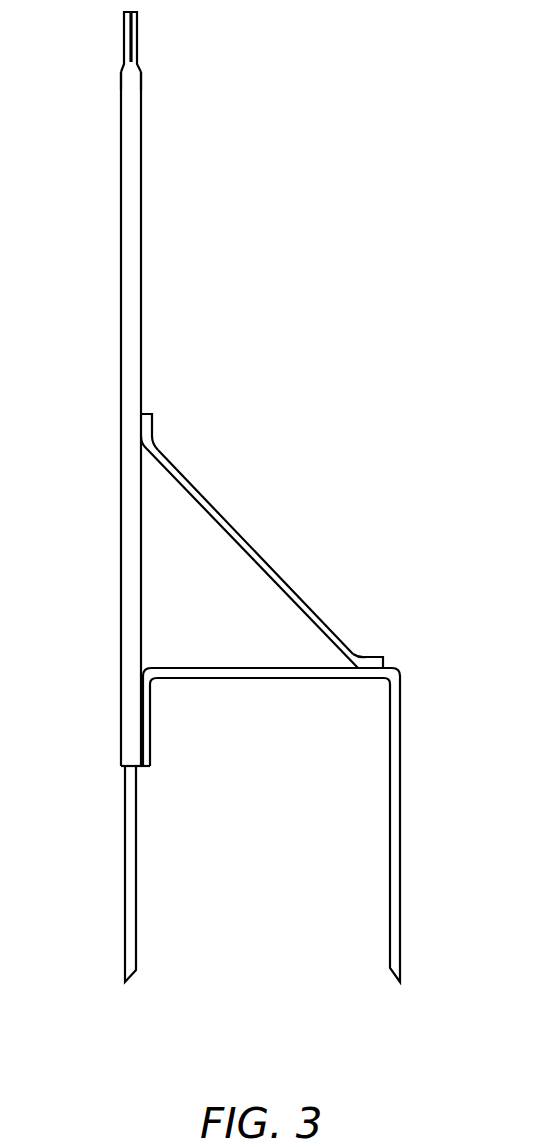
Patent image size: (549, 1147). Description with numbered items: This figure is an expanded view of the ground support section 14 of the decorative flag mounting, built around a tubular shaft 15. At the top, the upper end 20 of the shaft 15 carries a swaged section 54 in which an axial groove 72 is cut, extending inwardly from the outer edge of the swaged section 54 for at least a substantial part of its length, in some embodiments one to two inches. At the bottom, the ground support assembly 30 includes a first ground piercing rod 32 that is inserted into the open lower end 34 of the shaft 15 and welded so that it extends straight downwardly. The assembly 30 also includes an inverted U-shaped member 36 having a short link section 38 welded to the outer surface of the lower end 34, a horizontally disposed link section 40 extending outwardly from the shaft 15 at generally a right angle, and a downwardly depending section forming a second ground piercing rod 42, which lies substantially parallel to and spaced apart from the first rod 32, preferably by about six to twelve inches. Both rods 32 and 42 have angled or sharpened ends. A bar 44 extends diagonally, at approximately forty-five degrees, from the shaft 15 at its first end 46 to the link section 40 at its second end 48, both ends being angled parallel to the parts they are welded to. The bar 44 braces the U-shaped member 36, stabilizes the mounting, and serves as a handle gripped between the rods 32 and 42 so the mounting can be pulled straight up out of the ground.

The ground support section 14 is at (322, 111).
The shaft 15 is at (121, 312).
The upper end 20 is at (133, 83).
The ground support assembly 30 is at (266, 532).
The first ground piercing rod 32 is at (131, 910).
The lower end 34 is at (130, 735).
The inverted U-shaped member 36 is at (307, 825).
The short link section 38 is at (144, 735).
The horizontally disposed link section 40 is at (322, 673).
The second ground piercing rod 42 is at (401, 749).
The bar 44 is at (270, 568).
The first end 46 is at (152, 420).
The second end 48 is at (372, 657).
The swaged section 54 is at (124, 50).
The axial groove 72 is at (137, 35).